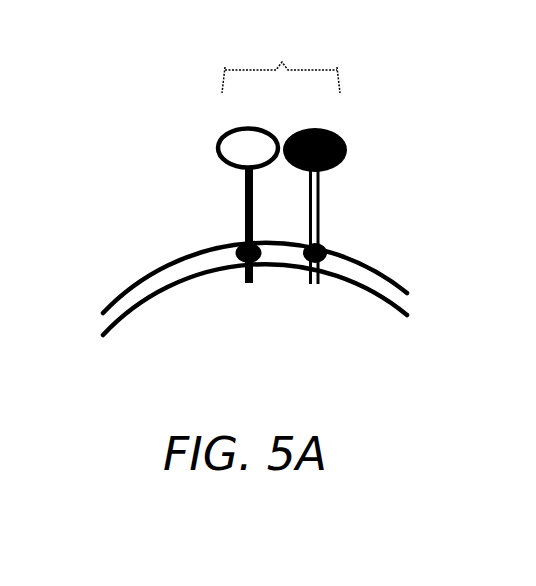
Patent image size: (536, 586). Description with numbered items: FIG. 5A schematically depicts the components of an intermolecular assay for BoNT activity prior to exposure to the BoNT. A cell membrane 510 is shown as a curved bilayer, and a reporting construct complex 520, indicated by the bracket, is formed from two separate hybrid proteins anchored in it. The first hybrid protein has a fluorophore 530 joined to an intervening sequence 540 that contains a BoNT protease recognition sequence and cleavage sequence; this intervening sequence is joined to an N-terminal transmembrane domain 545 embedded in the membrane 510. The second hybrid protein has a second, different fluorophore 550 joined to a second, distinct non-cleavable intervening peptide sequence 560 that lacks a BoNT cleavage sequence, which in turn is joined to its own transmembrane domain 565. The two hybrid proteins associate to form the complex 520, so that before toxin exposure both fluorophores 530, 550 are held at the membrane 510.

The cell membrane 510 is at (140, 280).
The probe pair 520 is at (282, 60).
The first probe head 530 is at (217, 144).
The first probe stem 540 is at (244, 207).
The first membrane anchor 545 is at (237, 247).
The second probe head 550 is at (347, 141).
The second probe stem 560 is at (321, 210).
The second membrane anchor 565 is at (328, 246).